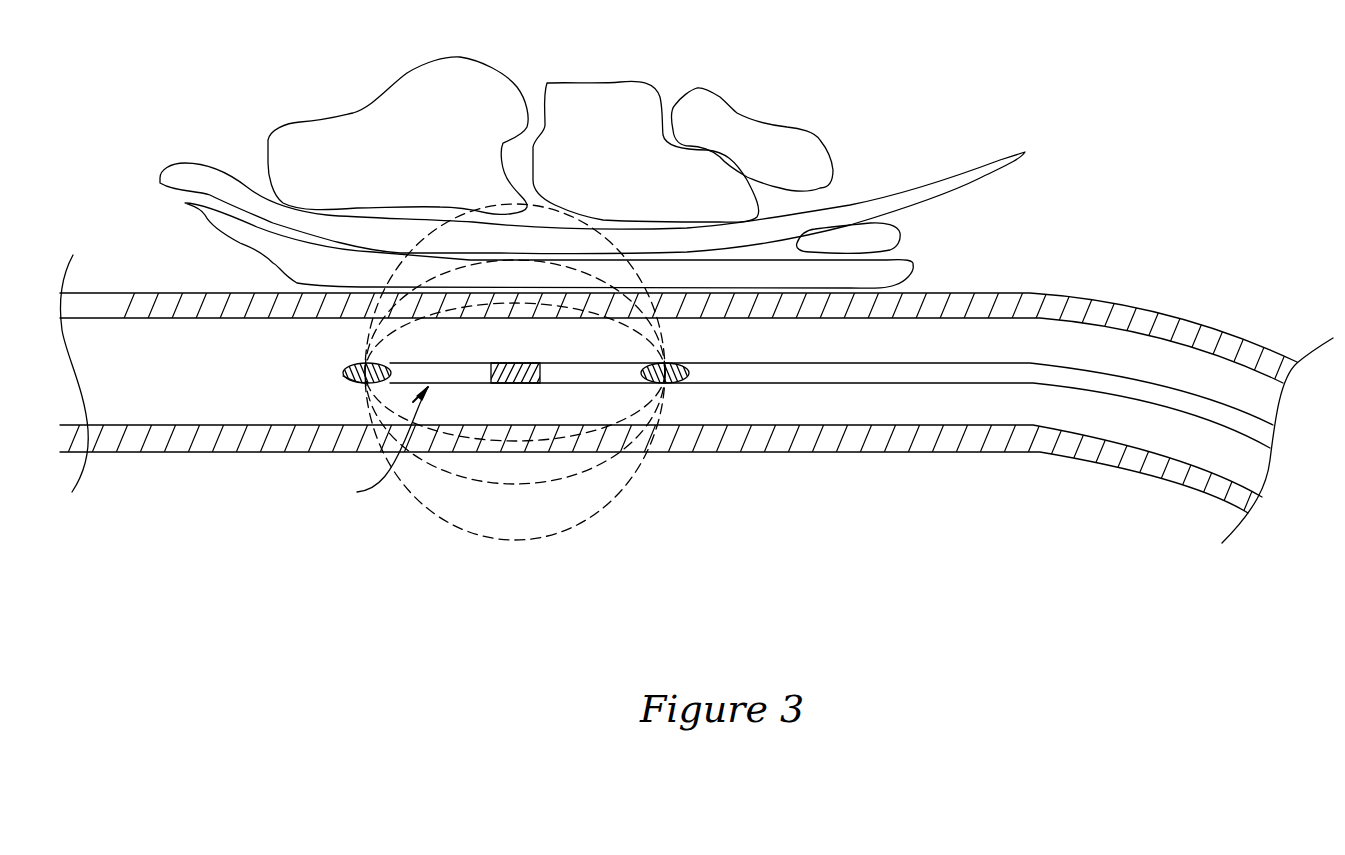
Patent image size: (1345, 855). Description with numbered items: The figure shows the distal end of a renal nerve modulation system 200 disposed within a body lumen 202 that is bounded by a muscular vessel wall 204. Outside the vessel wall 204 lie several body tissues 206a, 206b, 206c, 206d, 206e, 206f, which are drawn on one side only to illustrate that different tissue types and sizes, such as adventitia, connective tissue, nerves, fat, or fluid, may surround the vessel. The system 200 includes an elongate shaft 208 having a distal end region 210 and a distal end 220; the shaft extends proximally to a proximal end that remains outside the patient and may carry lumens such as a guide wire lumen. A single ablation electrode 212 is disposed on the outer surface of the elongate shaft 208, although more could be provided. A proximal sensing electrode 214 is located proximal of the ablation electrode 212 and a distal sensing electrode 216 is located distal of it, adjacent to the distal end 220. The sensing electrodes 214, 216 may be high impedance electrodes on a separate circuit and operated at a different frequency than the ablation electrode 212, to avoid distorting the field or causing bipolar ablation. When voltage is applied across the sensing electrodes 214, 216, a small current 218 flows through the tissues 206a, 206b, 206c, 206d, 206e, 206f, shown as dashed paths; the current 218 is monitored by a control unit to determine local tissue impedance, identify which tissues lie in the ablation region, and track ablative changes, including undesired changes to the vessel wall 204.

The renal nerve modulation system 200 is at (692, 271).
The body lumen 202 is at (179, 393).
The vessel wall 204 is at (1185, 323).
The body tissue 206a is at (903, 276).
The body tissue 206b is at (893, 237).
The body tissue 206c is at (985, 165).
The body tissue 206d is at (750, 135).
The body tissue 206e is at (603, 93).
The body tissue 206f is at (410, 85).
The elongate shaft 208 is at (1038, 372).
The distal end region 210 is at (370, 446).
The ablation electrode 212 is at (520, 384).
The proximal sensing electrode 214 is at (668, 384).
The distal sensing electrode 216 is at (358, 368).
The current 218 is at (665, 344).
The distal end 220 is at (350, 383).